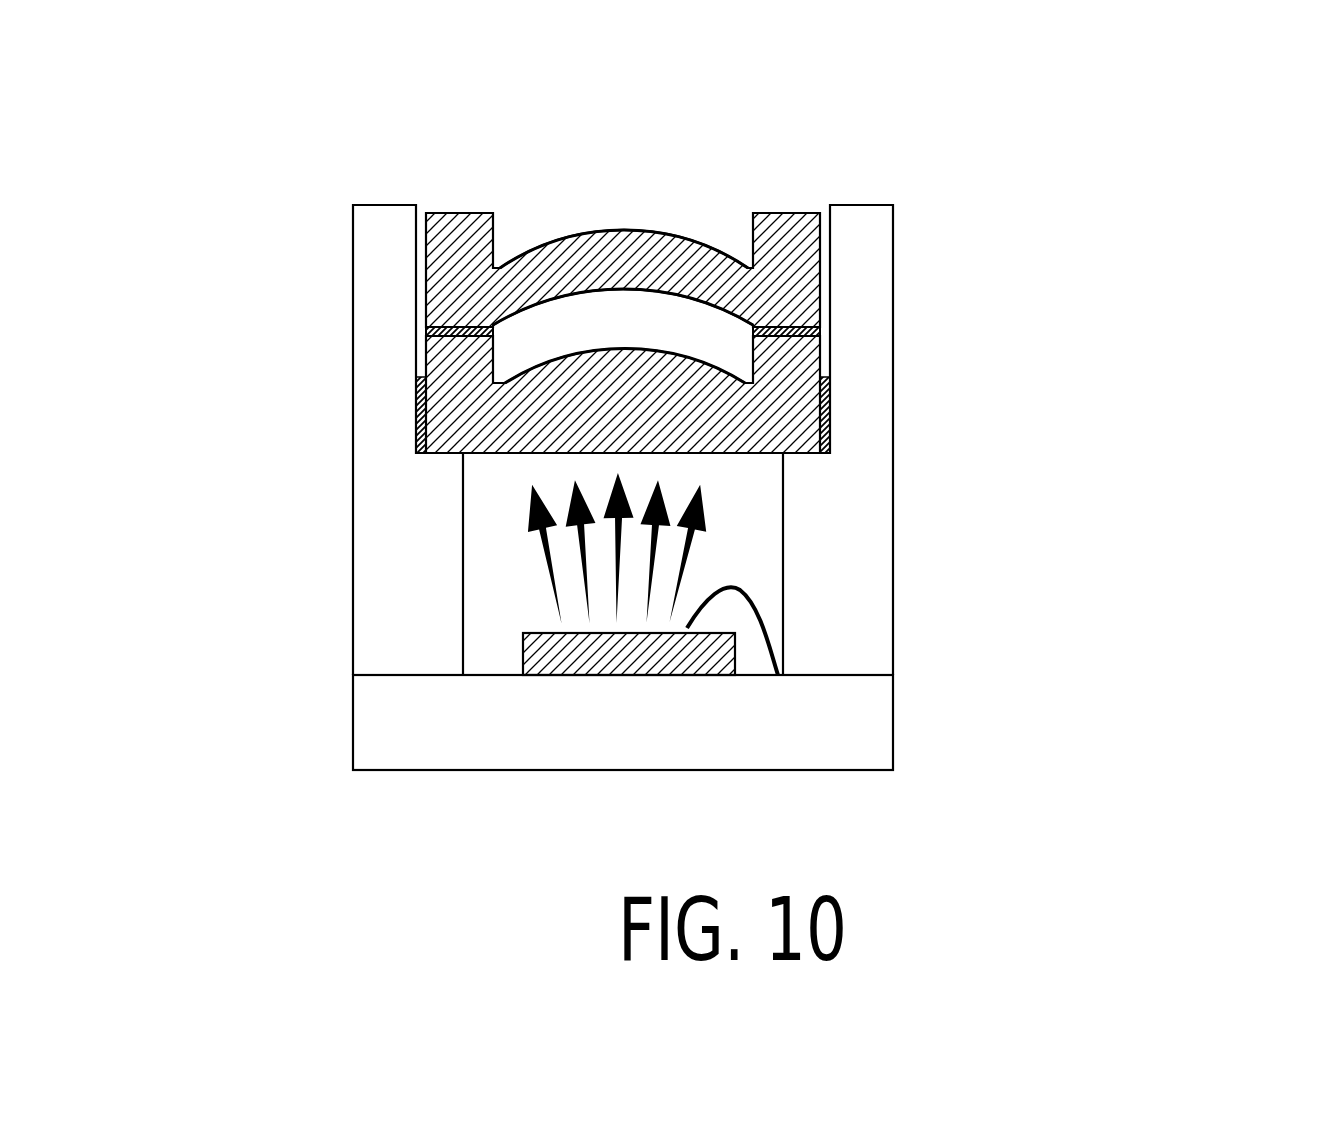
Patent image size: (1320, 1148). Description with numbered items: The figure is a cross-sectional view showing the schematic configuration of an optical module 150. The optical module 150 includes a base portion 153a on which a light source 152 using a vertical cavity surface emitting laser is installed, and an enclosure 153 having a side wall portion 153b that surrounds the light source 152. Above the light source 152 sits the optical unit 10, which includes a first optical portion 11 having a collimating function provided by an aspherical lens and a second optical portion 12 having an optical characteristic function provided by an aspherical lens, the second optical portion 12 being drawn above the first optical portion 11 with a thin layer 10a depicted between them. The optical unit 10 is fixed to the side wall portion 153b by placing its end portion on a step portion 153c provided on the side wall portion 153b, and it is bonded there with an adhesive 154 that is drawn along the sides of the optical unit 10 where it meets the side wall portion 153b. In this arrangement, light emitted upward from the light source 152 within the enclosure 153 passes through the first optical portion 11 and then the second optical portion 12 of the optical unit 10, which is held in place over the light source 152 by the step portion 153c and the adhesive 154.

The optical module 150 is at (840, 155).
The optical unit 10 is at (590, 213).
The second optical portion 12 is at (820, 283).
The bonding portion 10a is at (820, 340).
The first optical portion 11 is at (820, 357).
The adhesive 154 is at (417, 423).
The enclosure 153 is at (1115, 553).
The side wall portion 153b is at (893, 600).
The step portion 153c is at (460, 453).
The base portion 153a is at (893, 718).
The light source 152 is at (522, 633).